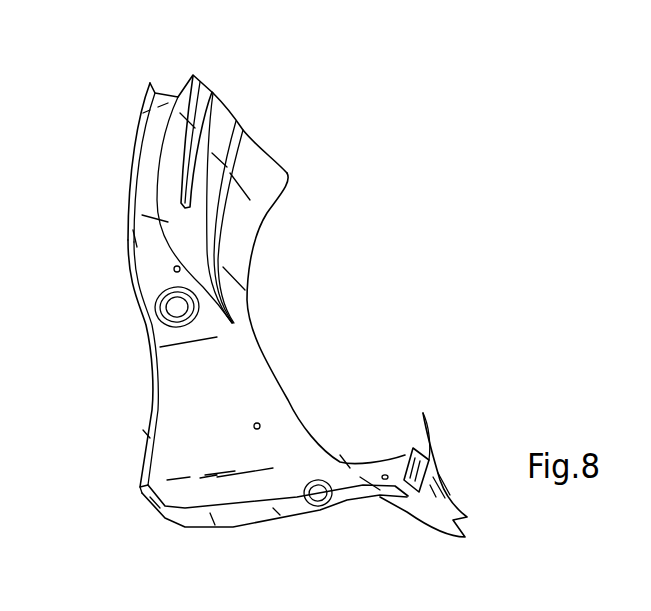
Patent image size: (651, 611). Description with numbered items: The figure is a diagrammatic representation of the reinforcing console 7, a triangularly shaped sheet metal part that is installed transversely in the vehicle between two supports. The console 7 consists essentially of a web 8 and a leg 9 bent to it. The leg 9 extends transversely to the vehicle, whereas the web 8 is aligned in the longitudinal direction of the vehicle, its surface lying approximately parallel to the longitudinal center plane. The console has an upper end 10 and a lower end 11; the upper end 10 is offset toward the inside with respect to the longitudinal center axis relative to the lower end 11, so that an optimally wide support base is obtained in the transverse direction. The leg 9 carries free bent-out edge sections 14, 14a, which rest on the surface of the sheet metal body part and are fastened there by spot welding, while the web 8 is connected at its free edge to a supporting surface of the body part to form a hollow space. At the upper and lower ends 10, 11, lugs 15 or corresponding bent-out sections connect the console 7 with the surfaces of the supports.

The reinforcing console 7 is at (118, 324).
The web 8 is at (247, 329).
The leg 9 is at (185, 452).
The upper end 10 is at (226, 82).
The lower end 11 is at (400, 535).
The free bent-out edge section 14 is at (142, 442).
The free bent-out edge section 14a is at (133, 153).
The lug 15 is at (254, 153).